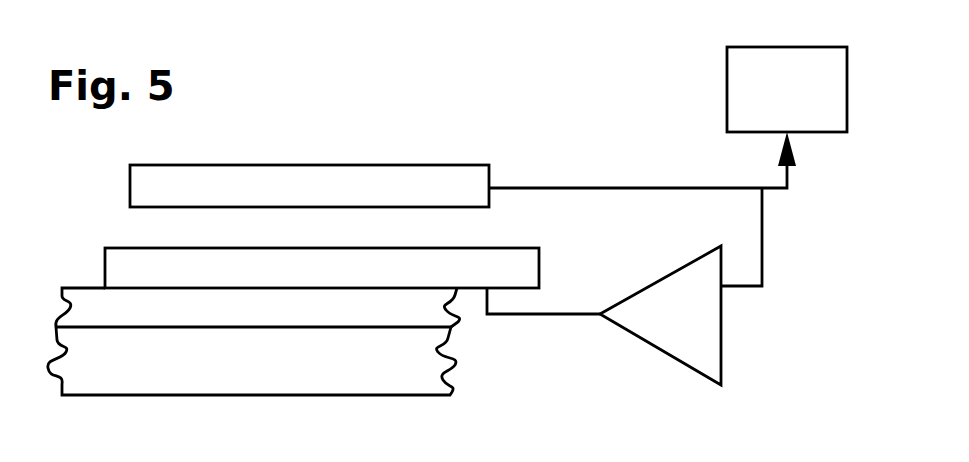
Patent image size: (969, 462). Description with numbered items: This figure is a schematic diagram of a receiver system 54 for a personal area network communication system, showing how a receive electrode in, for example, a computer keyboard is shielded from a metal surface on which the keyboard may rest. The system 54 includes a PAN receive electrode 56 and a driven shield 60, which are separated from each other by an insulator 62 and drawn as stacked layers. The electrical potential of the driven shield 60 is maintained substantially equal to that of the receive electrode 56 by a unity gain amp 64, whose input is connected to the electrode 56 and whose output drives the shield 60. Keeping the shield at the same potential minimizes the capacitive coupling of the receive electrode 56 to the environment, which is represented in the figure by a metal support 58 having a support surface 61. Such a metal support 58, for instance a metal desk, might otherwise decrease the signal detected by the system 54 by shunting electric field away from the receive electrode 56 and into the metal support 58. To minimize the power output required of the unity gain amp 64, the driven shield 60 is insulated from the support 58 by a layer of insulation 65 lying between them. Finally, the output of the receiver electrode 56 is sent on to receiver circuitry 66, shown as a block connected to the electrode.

The receiver system 54 is at (330, 124).
The PAN receive electrode 56 is at (372, 165).
The metal support 58 is at (427, 390).
The driven shield 60 is at (533, 273).
The support surface 61 is at (124, 327).
The insulator 62 is at (470, 228).
The unity gain amp 64 is at (722, 356).
The insulation 65 is at (88, 300).
The receiver circuitry 66 is at (727, 82).